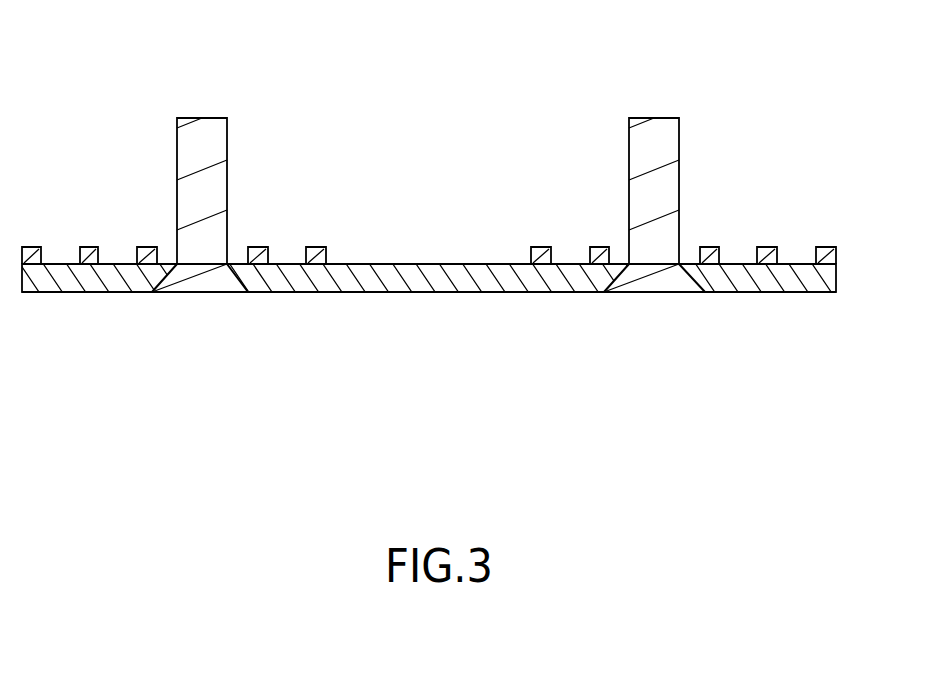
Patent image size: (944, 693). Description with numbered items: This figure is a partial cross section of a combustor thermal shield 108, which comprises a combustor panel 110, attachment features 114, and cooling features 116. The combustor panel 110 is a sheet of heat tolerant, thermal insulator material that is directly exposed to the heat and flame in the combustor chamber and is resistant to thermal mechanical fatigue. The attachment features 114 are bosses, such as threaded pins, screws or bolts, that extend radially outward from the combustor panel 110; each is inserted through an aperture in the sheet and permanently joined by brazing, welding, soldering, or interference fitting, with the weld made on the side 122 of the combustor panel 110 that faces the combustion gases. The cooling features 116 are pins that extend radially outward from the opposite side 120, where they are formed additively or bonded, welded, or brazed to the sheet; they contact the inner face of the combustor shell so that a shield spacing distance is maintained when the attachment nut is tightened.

The combustor thermal shield 108 is at (787, 147).
The combustor panel 110 is at (796, 282).
The attachment feature 114 is at (218, 181).
The cooling feature 116 is at (322, 265).
The side 120 is at (121, 255).
The side 122 is at (123, 313).